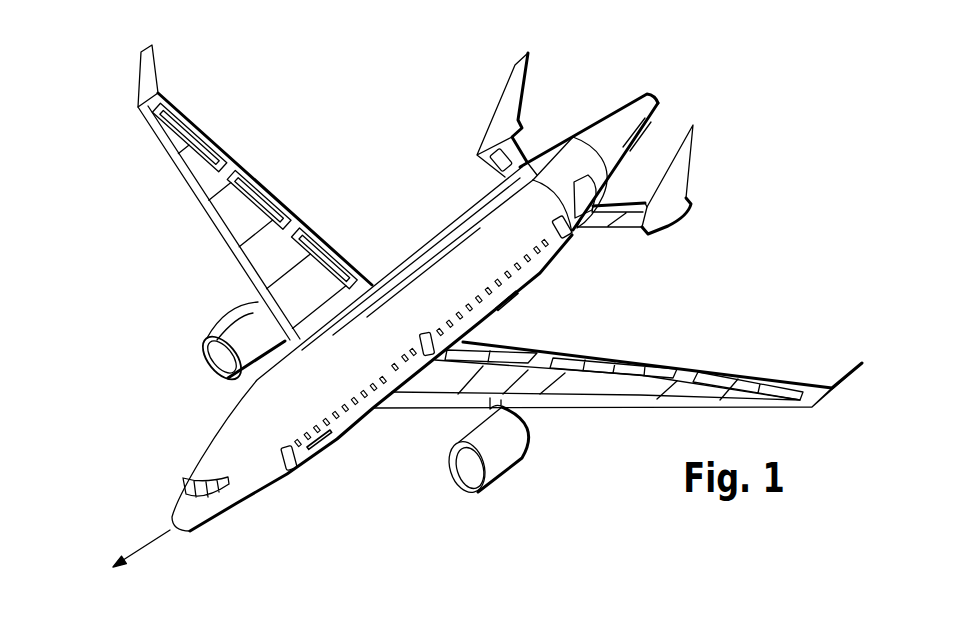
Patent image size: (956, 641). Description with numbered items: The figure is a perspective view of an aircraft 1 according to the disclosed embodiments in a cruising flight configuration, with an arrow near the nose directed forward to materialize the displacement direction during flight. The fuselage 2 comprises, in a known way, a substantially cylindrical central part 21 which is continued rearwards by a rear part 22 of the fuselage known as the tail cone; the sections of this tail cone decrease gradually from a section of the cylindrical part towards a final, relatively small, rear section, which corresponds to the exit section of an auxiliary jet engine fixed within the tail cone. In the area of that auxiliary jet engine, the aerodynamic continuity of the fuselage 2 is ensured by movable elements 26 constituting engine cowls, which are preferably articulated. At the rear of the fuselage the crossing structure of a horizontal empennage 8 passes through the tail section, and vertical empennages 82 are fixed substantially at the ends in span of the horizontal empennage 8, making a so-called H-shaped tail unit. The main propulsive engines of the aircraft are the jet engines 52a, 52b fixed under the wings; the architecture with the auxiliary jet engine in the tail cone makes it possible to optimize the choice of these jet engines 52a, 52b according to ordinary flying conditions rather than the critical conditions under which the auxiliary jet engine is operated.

The aircraft 1 is at (322, 128).
The fuselage 2 is at (289, 487).
The central part 21 is at (441, 238).
The rear part 22 is at (603, 93).
The movable elements 26 is at (664, 104).
The horizontal empennage 8 is at (613, 235).
The vertical empennages 82 is at (519, 89).
The jet engine 52a is at (516, 463).
The jet engine 52b is at (213, 335).